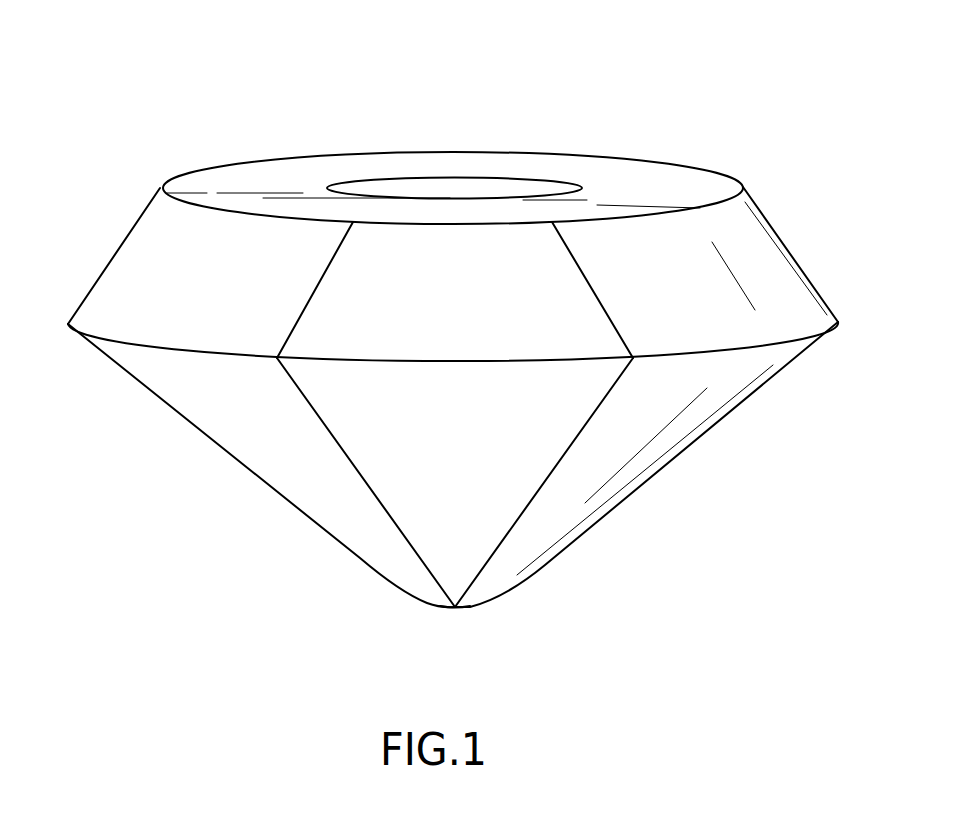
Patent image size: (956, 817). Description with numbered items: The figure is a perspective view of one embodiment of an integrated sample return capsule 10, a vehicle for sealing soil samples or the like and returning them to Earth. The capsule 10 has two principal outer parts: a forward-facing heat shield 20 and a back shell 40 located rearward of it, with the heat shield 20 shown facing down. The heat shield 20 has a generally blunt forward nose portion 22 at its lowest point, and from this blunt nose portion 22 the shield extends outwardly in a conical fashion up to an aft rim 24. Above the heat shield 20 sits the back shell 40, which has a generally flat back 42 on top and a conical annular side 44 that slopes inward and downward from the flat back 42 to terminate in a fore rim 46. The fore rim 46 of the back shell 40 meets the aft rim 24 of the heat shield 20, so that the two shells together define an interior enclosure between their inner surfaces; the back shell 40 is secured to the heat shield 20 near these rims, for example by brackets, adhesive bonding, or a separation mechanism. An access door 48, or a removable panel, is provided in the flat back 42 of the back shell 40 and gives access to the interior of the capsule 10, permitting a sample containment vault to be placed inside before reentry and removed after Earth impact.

The integrated sample return capsule 10 is at (688, 66).
The heat shield 20 is at (62, 590).
The blunt forward nose portion 22 is at (457, 608).
The aft rim 24 is at (837, 327).
The back shell 40 is at (62, 158).
The flat back 42 is at (712, 183).
The conical annular side 44 is at (793, 250).
The fore rim 46 is at (837, 315).
The access door 48 is at (442, 187).